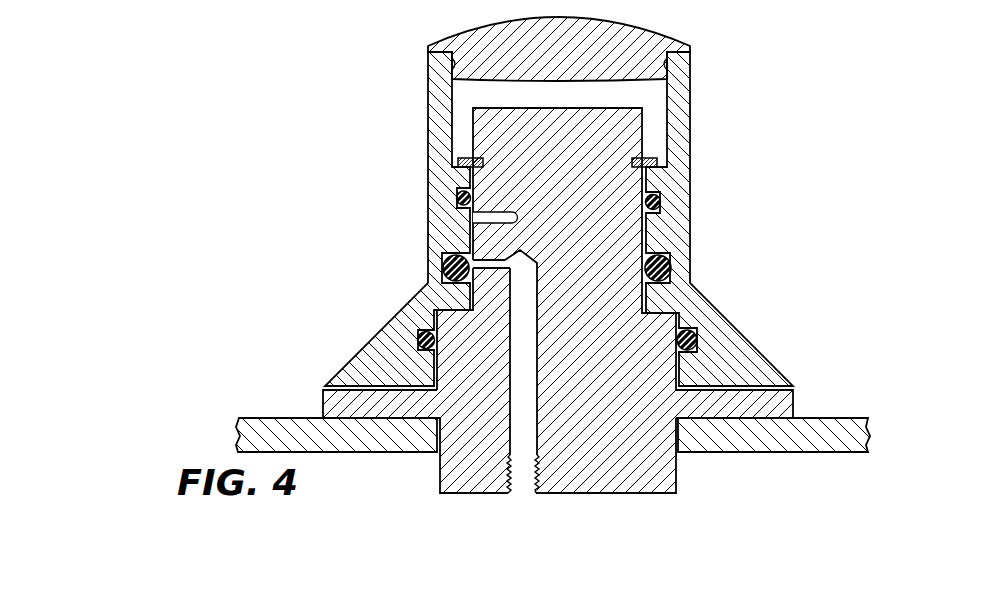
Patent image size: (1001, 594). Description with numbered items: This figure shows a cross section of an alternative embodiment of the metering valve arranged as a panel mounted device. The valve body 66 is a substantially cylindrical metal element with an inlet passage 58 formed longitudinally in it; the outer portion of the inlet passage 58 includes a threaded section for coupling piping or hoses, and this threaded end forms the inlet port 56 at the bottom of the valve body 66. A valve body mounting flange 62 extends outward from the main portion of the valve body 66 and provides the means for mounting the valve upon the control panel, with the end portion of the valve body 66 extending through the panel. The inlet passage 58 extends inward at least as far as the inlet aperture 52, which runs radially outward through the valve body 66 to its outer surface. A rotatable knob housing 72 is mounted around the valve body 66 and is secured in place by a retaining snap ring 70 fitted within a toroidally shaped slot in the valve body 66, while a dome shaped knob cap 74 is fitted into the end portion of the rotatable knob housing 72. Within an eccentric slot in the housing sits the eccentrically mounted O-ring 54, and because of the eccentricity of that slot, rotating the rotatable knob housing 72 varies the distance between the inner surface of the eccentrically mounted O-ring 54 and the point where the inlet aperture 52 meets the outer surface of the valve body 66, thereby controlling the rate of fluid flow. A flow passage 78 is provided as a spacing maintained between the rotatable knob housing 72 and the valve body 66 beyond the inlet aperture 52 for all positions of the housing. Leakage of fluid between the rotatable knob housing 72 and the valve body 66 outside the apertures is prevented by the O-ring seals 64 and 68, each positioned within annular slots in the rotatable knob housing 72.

The knob cap 74 is at (648, 37).
The rotatable knob housing 72 is at (690, 95).
The retaining snap ring 70 is at (657, 162).
The O-ring seal 68 is at (658, 203).
The valve body 66 is at (636, 245).
The O-ring seal 64 is at (688, 337).
The valve body mounting flange 62 is at (847, 472).
The inlet passage 58 is at (532, 438).
The inlet port 56 is at (527, 476).
The eccentrically mounted O-ring 54 is at (443, 271).
The inlet aperture 52 is at (490, 262).
The flow passage 78 is at (466, 216).